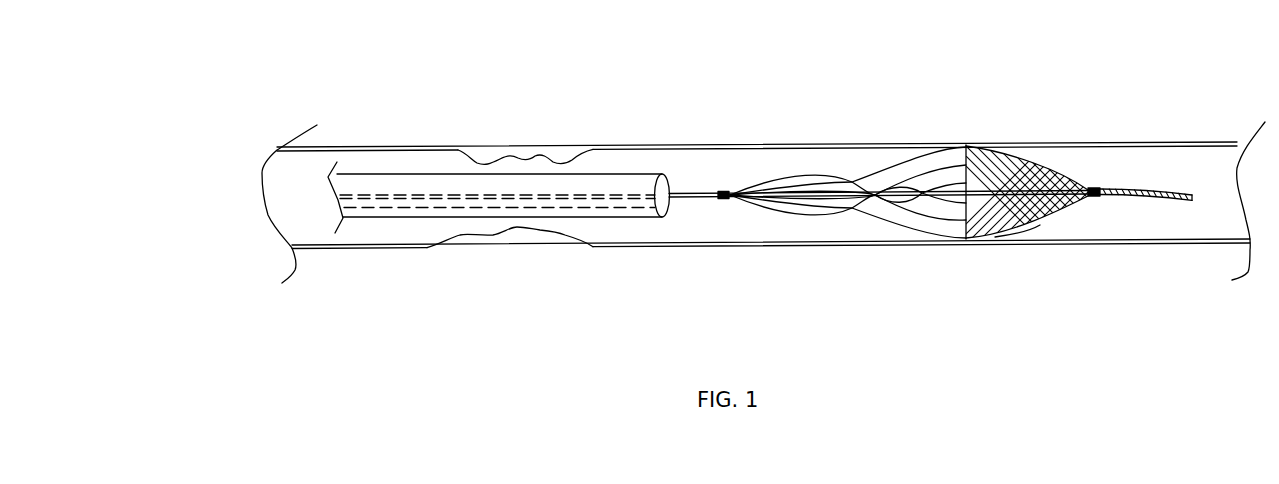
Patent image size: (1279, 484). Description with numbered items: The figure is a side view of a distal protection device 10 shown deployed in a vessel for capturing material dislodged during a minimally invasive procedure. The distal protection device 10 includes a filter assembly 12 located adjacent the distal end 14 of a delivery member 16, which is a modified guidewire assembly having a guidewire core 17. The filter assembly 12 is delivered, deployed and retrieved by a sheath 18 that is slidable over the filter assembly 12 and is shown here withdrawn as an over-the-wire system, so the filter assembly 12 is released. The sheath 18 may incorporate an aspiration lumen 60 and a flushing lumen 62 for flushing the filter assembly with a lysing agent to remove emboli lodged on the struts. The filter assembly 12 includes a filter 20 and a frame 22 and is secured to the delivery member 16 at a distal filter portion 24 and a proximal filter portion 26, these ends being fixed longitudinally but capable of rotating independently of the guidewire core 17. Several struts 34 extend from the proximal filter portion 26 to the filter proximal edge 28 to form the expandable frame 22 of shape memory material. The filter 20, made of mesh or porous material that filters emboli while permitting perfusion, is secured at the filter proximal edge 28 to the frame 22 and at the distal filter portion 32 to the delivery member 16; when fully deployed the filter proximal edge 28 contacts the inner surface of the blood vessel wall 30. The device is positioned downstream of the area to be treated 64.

The distal protection device 10 is at (394, 142).
The filter assembly 12 is at (1061, 203).
The distal end 14 is at (1178, 208).
The delivery member 16 is at (1110, 196).
The guidewire core 17 is at (857, 192).
The sheath 18 is at (495, 173).
The filter 20 is at (963, 243).
The frame 22 is at (893, 230).
The distal filter portion 24 is at (1094, 197).
The proximal filter portion 26 is at (722, 191).
The filter proximal edge 28 is at (966, 145).
The blood vessel wall 30 is at (990, 239).
The distal filter portion 32 is at (1040, 225).
The struts 34 is at (867, 170).
The aspiration lumen 60 is at (562, 213).
The flushing lumen 62 is at (673, 210).
The area to be treated 64 is at (490, 153).